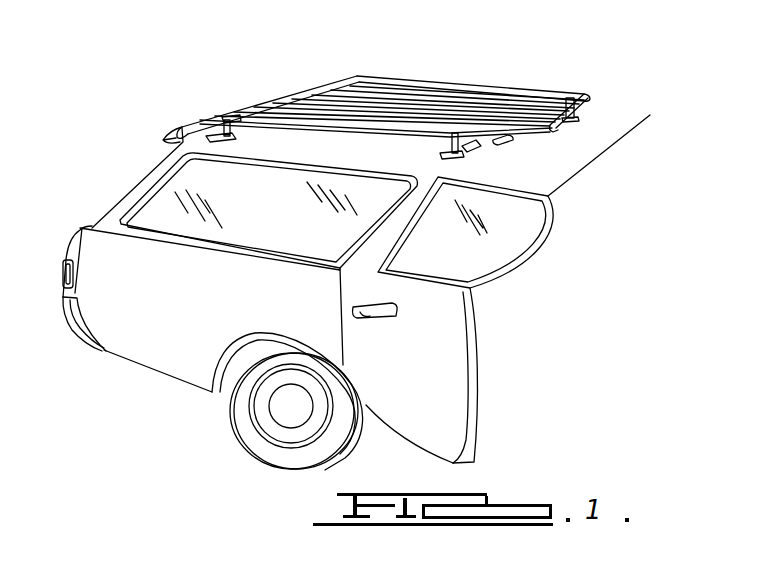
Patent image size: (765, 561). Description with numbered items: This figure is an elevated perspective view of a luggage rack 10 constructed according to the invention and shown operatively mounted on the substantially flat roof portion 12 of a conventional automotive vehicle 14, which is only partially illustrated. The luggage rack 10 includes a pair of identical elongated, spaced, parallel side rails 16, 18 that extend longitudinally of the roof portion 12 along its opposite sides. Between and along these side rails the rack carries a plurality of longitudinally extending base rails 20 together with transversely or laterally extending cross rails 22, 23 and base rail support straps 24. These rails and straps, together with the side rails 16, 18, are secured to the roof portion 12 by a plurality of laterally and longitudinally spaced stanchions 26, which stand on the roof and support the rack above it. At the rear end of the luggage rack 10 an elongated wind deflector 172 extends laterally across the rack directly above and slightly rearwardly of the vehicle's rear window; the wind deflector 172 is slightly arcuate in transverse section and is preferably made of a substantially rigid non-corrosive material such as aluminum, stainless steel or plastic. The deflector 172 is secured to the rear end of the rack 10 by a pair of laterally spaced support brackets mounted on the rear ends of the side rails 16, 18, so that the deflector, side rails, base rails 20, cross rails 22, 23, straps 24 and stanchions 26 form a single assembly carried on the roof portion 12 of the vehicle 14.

The luggage rack 10 is at (548, 80).
The roof portion 12 is at (594, 159).
The automotive vehicle 14 is at (138, 373).
The side rail 16 is at (347, 125).
The side rail 18 is at (428, 86).
The base rails 20 is at (512, 142).
The cross rail 22 is at (301, 96).
The cross rail 23 is at (582, 110).
The base rail support straps 24 is at (472, 153).
The stanchions 26 is at (227, 142).
The wind deflector 172 is at (252, 92).